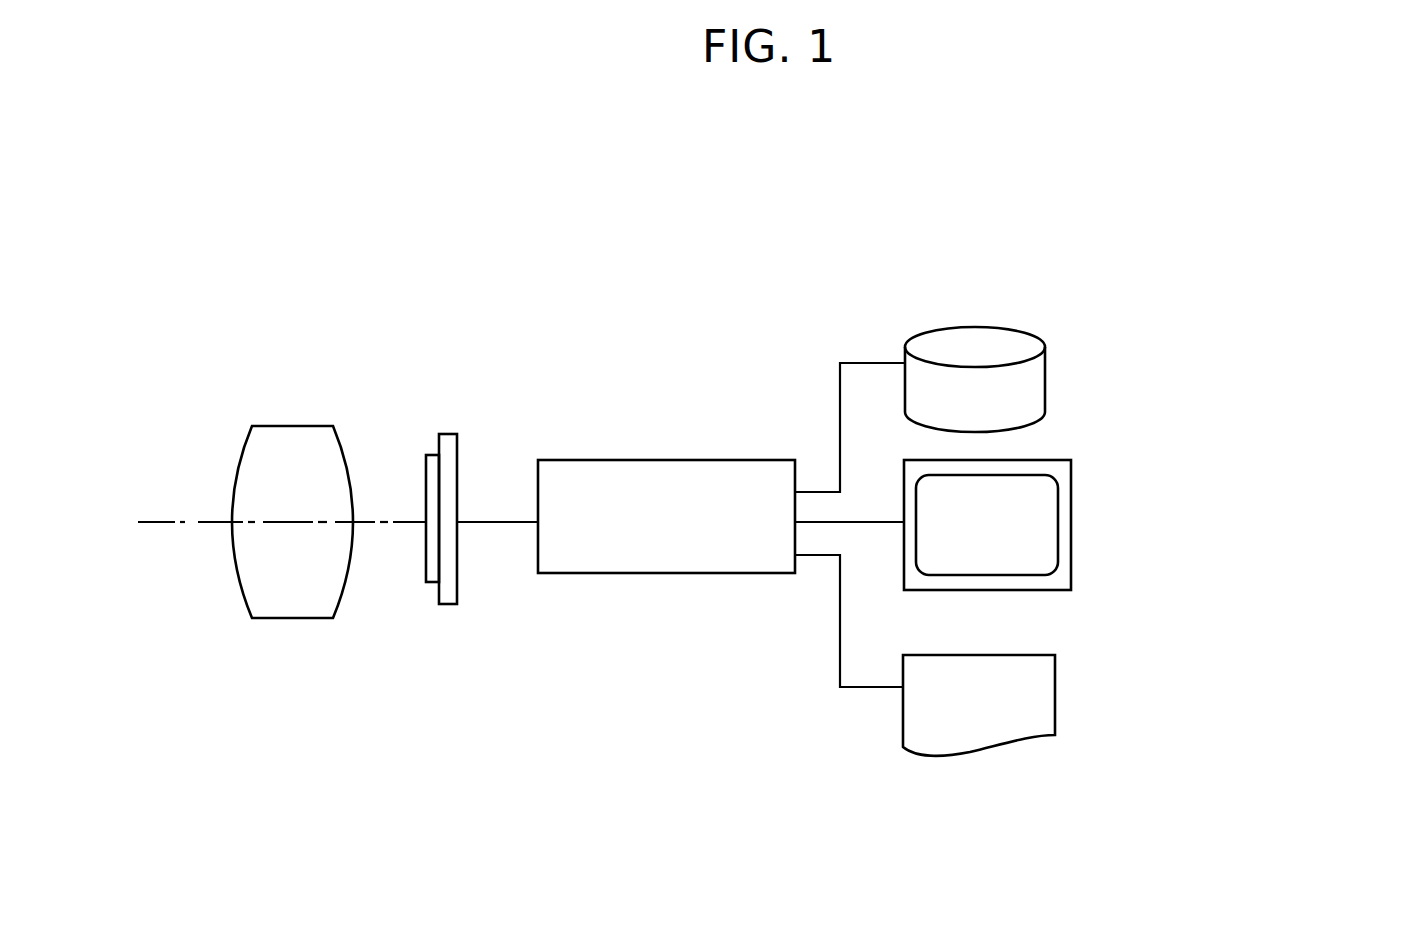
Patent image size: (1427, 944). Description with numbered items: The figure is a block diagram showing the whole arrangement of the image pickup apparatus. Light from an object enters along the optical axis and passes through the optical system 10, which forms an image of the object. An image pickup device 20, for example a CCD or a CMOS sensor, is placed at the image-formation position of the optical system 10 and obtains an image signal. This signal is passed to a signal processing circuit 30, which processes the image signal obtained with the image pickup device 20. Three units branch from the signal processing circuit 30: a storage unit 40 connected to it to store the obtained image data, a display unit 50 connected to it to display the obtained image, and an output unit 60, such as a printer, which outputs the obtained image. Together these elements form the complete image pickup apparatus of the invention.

The optical system 10 is at (287, 426).
The image pickup device 20 is at (450, 434).
The signal processing circuit 30 is at (666, 516).
The storage unit 40 is at (967, 326).
The display unit 50 is at (1071, 531).
The output unit 60 is at (1055, 696).